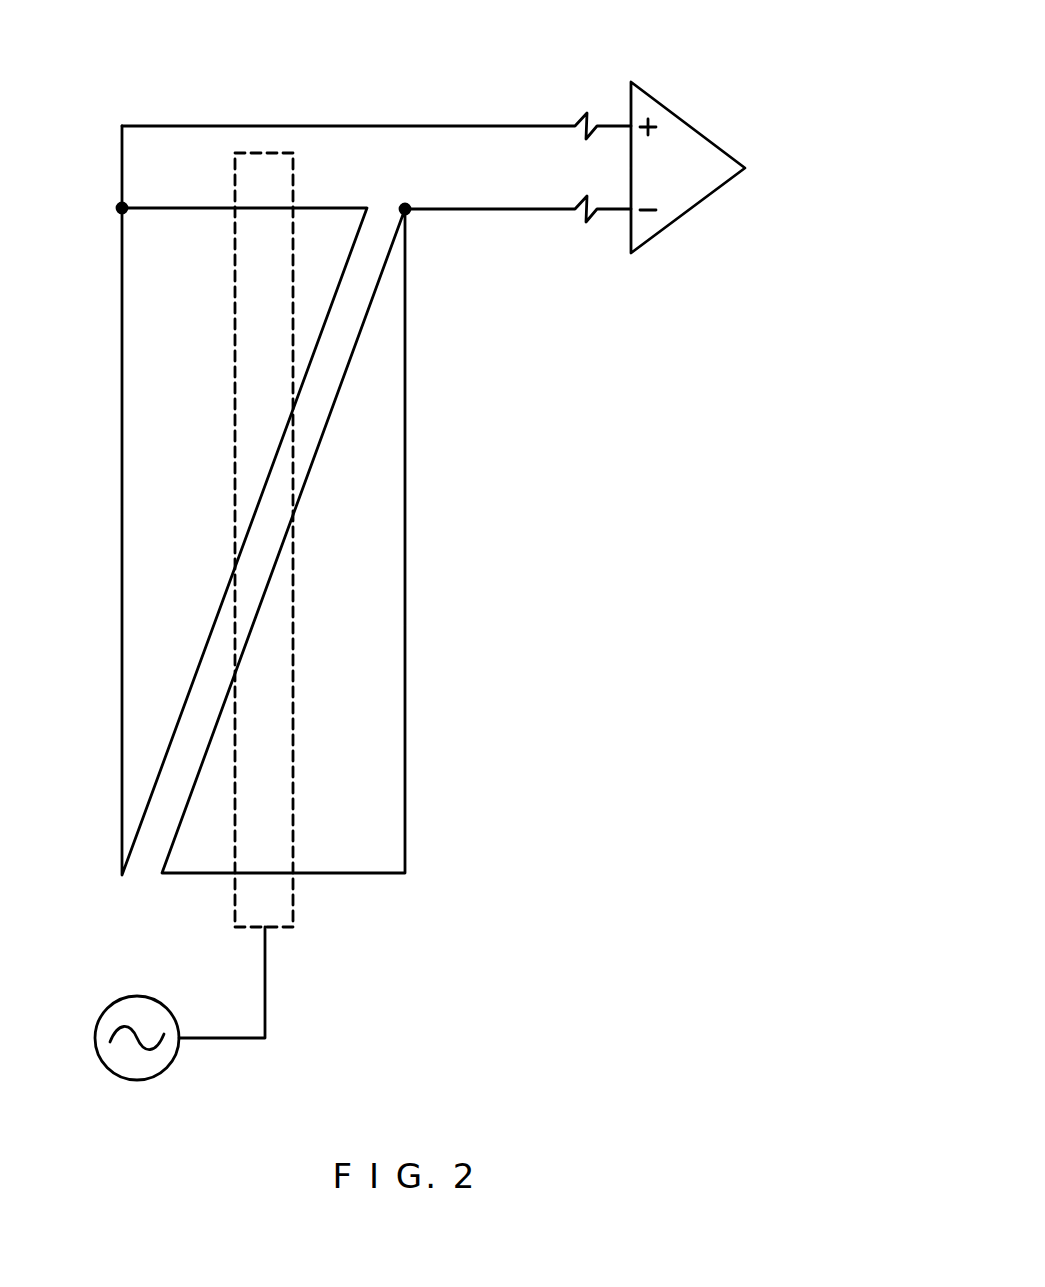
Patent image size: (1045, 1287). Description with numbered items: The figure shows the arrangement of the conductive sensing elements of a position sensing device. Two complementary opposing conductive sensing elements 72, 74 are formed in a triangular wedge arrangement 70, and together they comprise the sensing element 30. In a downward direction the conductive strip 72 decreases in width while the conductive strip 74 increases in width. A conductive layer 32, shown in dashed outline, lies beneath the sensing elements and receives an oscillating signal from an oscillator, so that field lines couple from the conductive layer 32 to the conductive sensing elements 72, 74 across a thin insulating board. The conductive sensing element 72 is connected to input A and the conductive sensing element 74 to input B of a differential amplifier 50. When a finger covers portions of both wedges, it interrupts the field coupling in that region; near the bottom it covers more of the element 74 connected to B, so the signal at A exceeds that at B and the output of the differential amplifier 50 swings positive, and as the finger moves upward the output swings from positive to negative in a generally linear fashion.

The triangular wedge arrangement 70 is at (712, 62).
The conductive sensing element 72 is at (150, 502).
The conductive sensing element 74 is at (383, 506).
The conductive layer 32 is at (273, 900).
The sensing element 30 is at (131, 1082).
The differential amplifier 50 is at (678, 203).